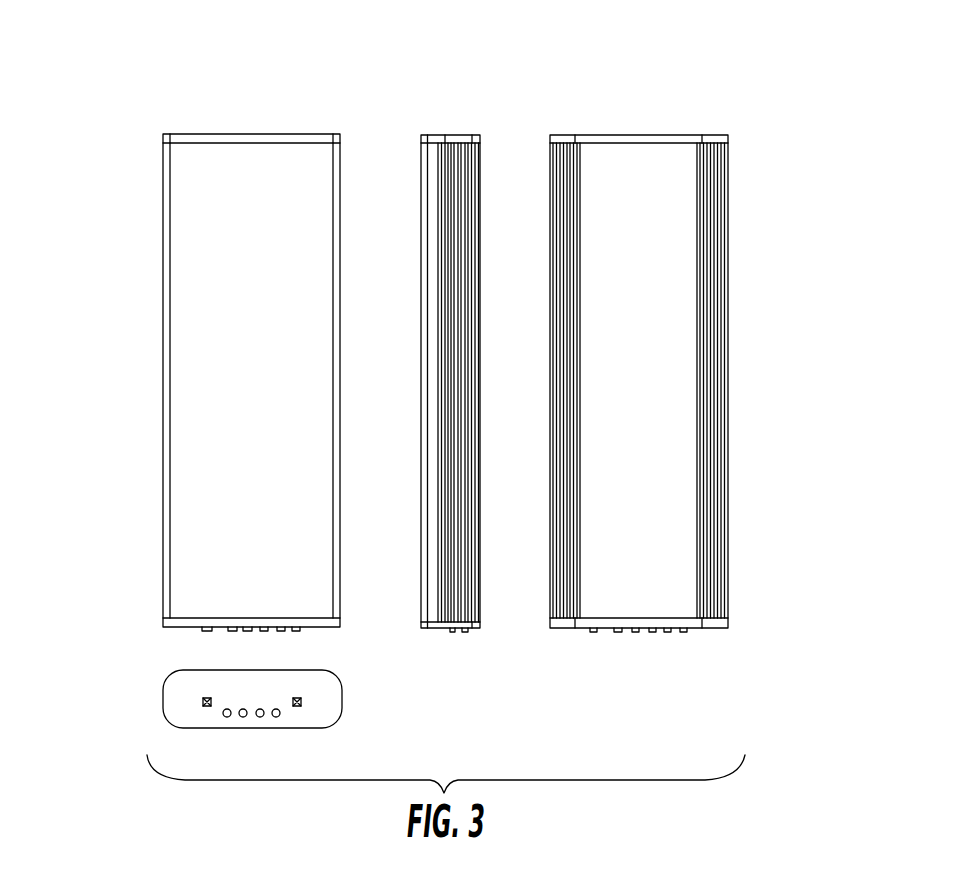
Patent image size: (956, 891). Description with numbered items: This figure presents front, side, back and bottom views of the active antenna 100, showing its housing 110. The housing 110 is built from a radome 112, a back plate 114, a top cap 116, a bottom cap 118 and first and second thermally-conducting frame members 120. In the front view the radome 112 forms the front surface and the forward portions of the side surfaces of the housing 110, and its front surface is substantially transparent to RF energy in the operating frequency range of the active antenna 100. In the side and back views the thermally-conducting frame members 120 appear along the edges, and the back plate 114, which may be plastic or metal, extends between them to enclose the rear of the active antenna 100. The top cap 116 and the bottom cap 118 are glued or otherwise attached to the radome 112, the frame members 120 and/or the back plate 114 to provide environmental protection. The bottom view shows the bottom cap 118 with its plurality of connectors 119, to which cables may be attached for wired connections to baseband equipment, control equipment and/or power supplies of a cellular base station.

The active antenna 100 is at (435, 389).
The housing 110 is at (251, 347).
The radome 112 is at (185, 423).
The back plate 114 is at (680, 612).
The top cap 116 is at (232, 138).
The bottom cap 118 is at (163, 690).
The connectors 119 is at (301, 697).
The thermally-conducting frame members 120 is at (475, 155).